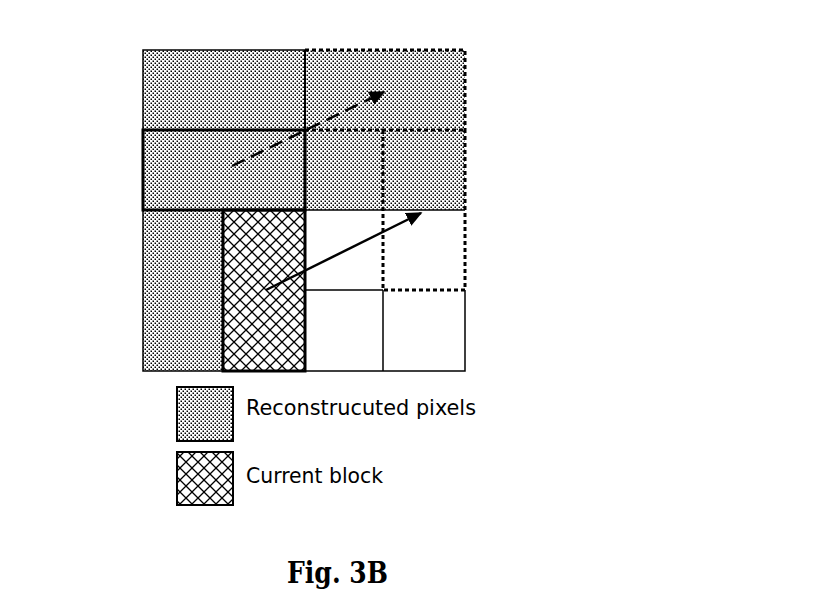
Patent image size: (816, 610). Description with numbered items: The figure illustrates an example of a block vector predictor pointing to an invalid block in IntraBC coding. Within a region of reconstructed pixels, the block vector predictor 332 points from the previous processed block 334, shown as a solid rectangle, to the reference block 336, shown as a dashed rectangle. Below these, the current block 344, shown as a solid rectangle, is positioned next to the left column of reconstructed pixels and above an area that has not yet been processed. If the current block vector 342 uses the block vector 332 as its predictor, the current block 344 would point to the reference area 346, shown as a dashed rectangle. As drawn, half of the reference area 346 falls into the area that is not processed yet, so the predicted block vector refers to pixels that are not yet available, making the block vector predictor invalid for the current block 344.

The block vector predictor 332 is at (244, 158).
The previous processed block 334 is at (209, 128).
The reference block 336 is at (300, 88).
The current block vector 342 is at (362, 243).
The current block 344 is at (215, 283).
The reference area 346 is at (427, 296).